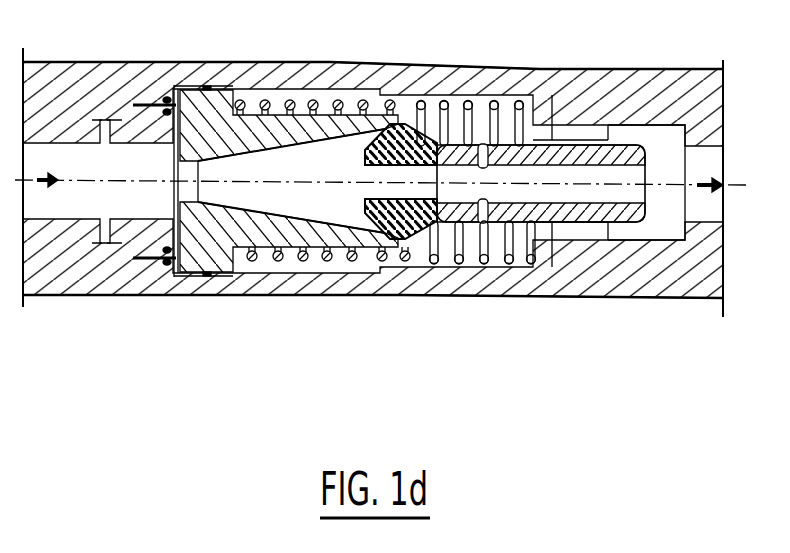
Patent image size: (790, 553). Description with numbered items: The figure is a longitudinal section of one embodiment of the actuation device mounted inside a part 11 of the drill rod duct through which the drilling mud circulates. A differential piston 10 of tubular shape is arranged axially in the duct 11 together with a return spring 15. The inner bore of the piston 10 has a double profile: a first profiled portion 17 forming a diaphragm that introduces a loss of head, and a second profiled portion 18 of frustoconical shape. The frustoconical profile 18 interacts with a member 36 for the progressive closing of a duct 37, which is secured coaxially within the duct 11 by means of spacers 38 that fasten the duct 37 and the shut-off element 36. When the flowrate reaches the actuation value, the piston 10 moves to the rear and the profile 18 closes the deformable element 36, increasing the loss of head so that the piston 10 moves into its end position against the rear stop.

The differential piston 10 is at (293, 213).
The part of the duct 11 is at (123, 73).
The return spring 15 is at (366, 97).
The first profiled portion 17 is at (185, 192).
The second profiled portion 18 is at (299, 140).
The shut-off member 36 is at (423, 128).
The duct 37 is at (562, 214).
The spacers 38 is at (594, 234).